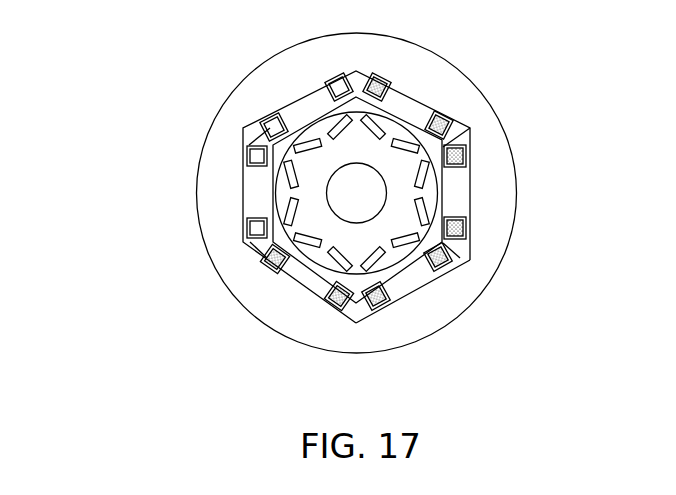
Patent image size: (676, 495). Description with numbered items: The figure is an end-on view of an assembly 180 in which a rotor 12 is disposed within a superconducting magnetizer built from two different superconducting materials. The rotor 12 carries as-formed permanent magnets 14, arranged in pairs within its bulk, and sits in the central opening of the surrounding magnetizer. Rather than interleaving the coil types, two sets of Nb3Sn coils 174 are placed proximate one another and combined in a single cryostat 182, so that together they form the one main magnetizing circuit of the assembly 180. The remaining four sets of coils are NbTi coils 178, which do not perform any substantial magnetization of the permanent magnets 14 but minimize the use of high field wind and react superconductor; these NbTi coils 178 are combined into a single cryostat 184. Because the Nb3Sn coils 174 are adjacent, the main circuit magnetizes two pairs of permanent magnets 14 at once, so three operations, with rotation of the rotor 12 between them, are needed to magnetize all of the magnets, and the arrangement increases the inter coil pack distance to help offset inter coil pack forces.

The assembly 180 is at (114, 46).
The cryostat 182 is at (243, 128).
The cryostat 184 is at (470, 260).
The Nb3Sn racetrack coils 174 is at (270, 118).
The NbTi racetrack coils 178 is at (440, 264).
The rotor 12 is at (438, 150).
The permanent magnets 14 is at (428, 178).